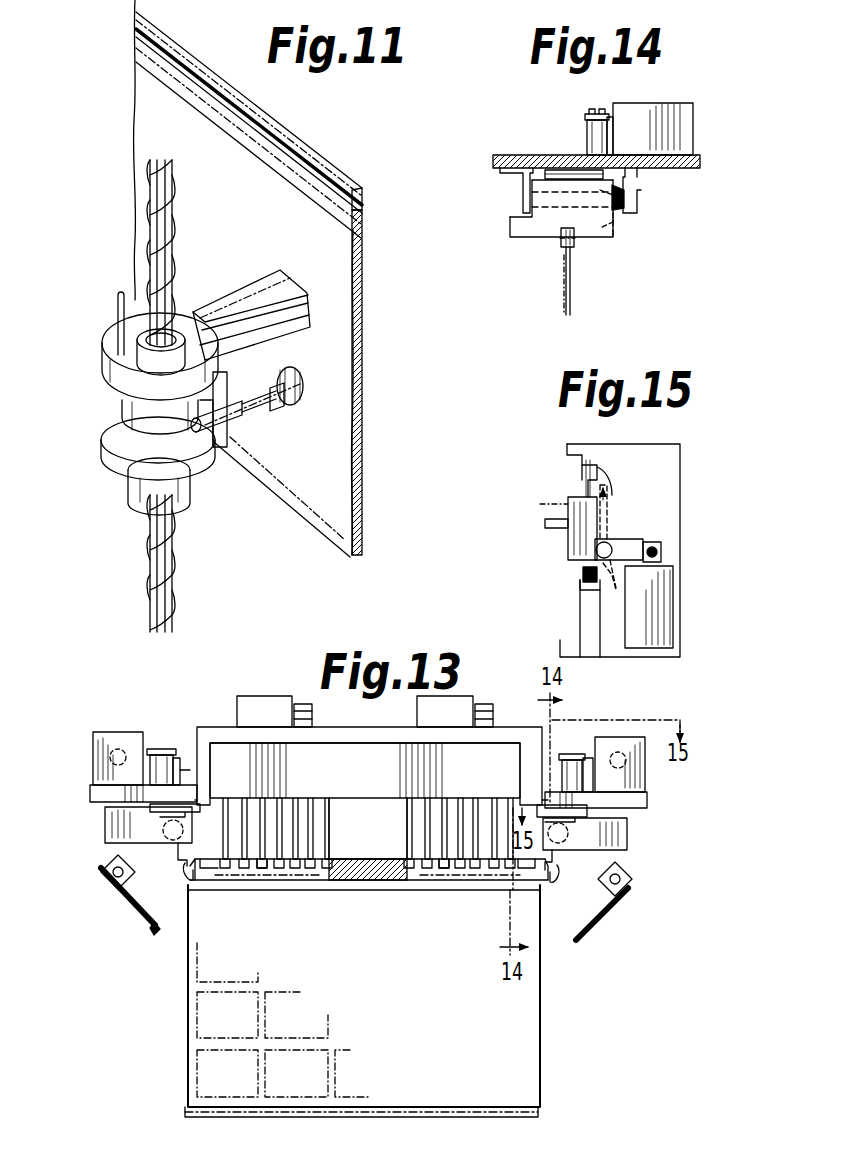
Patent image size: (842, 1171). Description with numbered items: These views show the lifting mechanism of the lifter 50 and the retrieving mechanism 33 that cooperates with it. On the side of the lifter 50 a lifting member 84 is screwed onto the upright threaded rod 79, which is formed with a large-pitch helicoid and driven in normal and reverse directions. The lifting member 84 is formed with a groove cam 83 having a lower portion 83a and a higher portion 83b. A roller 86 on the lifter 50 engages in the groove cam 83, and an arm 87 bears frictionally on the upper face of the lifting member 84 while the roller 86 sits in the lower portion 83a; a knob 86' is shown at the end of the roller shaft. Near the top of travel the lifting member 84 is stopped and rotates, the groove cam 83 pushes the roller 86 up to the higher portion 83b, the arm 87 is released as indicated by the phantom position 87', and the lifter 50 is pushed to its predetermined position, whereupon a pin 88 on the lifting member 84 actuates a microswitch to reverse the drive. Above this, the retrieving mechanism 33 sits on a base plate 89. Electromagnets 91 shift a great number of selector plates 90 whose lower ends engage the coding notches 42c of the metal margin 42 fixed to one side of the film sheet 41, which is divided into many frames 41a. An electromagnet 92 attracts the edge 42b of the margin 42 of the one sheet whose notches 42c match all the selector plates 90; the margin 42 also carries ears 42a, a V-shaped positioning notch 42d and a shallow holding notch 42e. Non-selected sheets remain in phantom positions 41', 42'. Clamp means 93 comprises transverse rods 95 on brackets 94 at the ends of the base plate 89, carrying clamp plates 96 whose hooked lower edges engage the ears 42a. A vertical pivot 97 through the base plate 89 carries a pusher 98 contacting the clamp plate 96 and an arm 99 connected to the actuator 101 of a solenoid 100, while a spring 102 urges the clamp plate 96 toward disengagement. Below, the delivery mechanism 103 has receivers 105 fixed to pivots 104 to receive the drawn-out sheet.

In FIG. 11, the lifter 50 is at (355, 425).
In FIG. 11, the threaded rod 79 is at (148, 540).
In FIG. 11, the pin 88 is at (116, 318).
In FIG. 11, the lifting member 84 is at (104, 386).
In FIG. 11, the groove cam 83 is at (110, 410).
In FIG. 11, the higher portion of the groove cam 83b is at (102, 440).
In FIG. 11, the lower portion of the groove cam 83a is at (216, 452).
In FIG. 11, the arm 87 is at (251, 305).
In FIG. 11, the arm (phantom position) 87' is at (242, 284).
In FIG. 11, the roller 86 is at (245, 411).
In FIG. 11, the knurled knob 86' is at (266, 380).
In FIG. 14, the base plate 89 is at (684, 170).
In FIG. 15, the base plate 89 is at (681, 480).
In FIG. 13, the base plate 89 is at (385, 732).
In FIG. 14, the solenoid 100 is at (693, 132).
In FIG. 15, the solenoid 100 is at (675, 605).
In FIG. 13, the solenoid 100 is at (112, 733).
In FIG. 14, the arm 99 is at (590, 118).
In FIG. 15, the arm 99 is at (633, 540).
In FIG. 13, the arm 99 is at (157, 752).
In FIG. 14, the actuator 101 is at (598, 108).
In FIG. 15, the actuator 101 is at (662, 546).
In FIG. 13, the actuator 101 is at (108, 757).
In FIG. 14, the vertical pivot 97 is at (590, 128).
In FIG. 15, the vertical pivot 97 is at (600, 582).
In FIG. 13, the vertical pivot 97 is at (176, 760).
In FIG. 14, the clamp means 93 is at (539, 150).
In FIG. 15, the clamp means 93 is at (560, 500).
In FIG. 13, the clamp means 93 is at (100, 808).
In FIG. 14, the pusher 98 is at (546, 170).
In FIG. 15, the pusher 98 is at (570, 550).
In FIG. 13, the pusher 98 is at (195, 815).
In FIG. 14, the bracket 94 is at (522, 194).
In FIG. 15, the bracket 94 is at (598, 470).
In FIG. 13, the bracket 94 is at (105, 826).
In FIG. 14, the clamp plate 96 is at (518, 222).
In FIG. 15, the clamp plate 96 is at (582, 483).
In FIG. 13, the clamp plate 96 is at (185, 876).
In FIG. 14, the spring 102 is at (620, 210).
In FIG. 15, the spring 102 is at (580, 578).
In FIG. 14, the transverse rod 95 is at (621, 226).
In FIG. 15, the transverse rod 95 is at (607, 494).
In FIG. 13, the transverse rod 95 is at (176, 862).
In FIG. 14, the metal margin 42 is at (584, 250).
In FIG. 15, the metal margin 42 is at (539, 533).
In FIG. 13, the metal margin 42 is at (368, 891).
In FIG. 14, the metal margin (phantom position) 42' is at (542, 255).
In FIG. 15, the metal margin (phantom position) 42' is at (535, 503).
In FIG. 13, the metal margin (phantom position) 42' is at (367, 907).
In FIG. 14, the film sheet 41 is at (587, 281).
In FIG. 13, the film sheet 41 is at (383, 996).
In FIG. 14, the film sheet (phantom position) 41' is at (535, 283).
In FIG. 13, the film sheet (phantom position) 41' is at (361, 1131).
In FIG. 13, the frames 41a is at (195, 1016).
In FIG. 13, the retrieving mechanism 33 is at (343, 748).
In FIG. 13, the electromagnets 91 is at (258, 700).
In FIG. 13, the selector plates 90 is at (300, 800).
In FIG. 13, the electromagnet 92 is at (367, 808).
In FIG. 13, the ears 42a is at (190, 880).
In FIG. 13, the edge 42b is at (380, 882).
In FIG. 13, the coding notches 42c is at (262, 878).
In FIG. 13, the V-shaped notch 42d is at (510, 880).
In FIG. 13, the shallow notch 42e is at (210, 878).
In FIG. 13, the pivots 104 is at (105, 866).
In FIG. 13, the receivers 105 is at (140, 918).
In FIG. 13, the delivery mechanism 103 is at (112, 900).